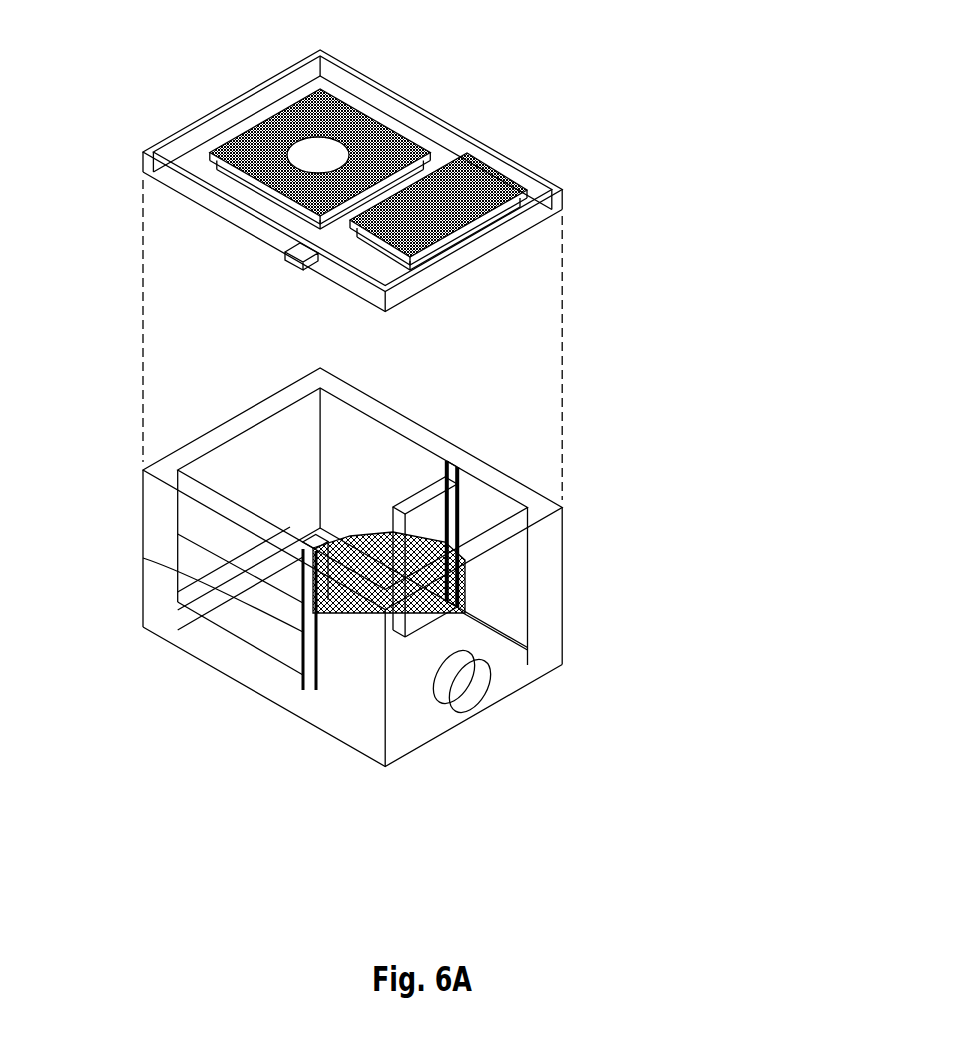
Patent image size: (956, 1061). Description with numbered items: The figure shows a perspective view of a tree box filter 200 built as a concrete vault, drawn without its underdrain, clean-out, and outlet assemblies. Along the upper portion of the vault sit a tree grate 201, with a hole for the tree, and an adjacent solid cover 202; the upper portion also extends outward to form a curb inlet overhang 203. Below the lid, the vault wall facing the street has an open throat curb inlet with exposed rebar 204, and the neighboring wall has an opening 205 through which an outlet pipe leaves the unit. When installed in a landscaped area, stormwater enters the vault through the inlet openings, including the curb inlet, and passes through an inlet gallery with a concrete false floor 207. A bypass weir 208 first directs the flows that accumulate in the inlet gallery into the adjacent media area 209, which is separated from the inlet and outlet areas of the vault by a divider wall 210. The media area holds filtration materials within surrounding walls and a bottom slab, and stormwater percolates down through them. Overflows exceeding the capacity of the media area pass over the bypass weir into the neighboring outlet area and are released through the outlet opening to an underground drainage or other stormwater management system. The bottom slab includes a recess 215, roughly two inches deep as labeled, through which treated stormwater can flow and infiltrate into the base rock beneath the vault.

The tree box filter 200 is at (692, 264).
The tree grate 201 is at (318, 108).
The solid cover 202 is at (463, 162).
The curb inlet overhang 203 is at (327, 292).
The open throat curb inlet with exposed rebar 204 is at (317, 687).
The opening for outlet pipe 205 is at (482, 703).
The inlet gallery with concrete false floor 207 is at (448, 463).
The bypass weir 208 is at (458, 472).
The media area 209 is at (246, 430).
The divider wall 210 is at (417, 480).
The recess in the bottom slab 215 is at (143, 558).